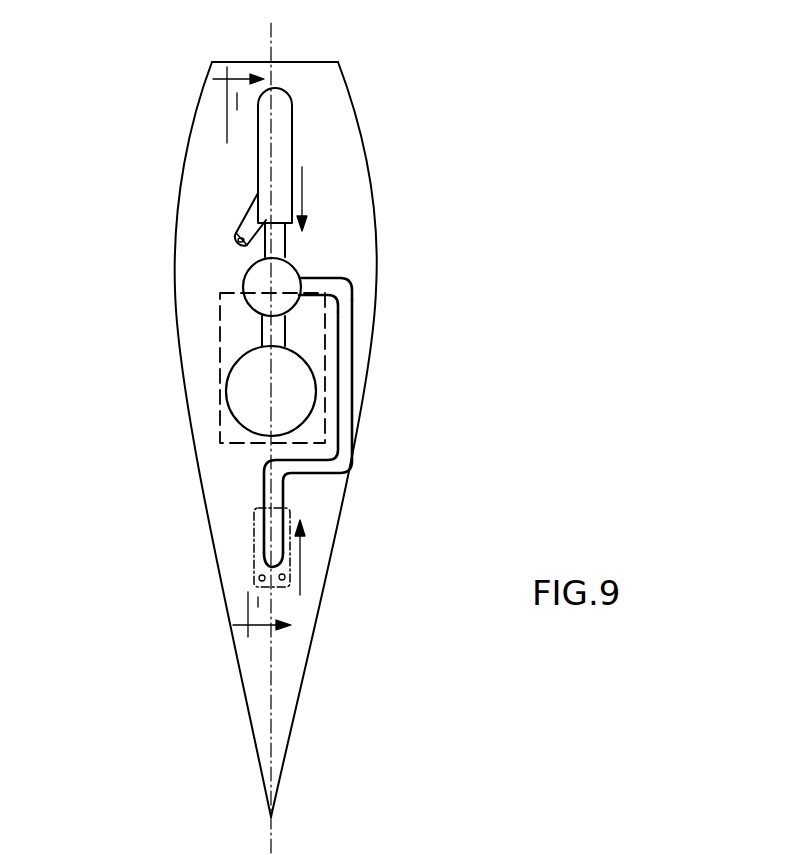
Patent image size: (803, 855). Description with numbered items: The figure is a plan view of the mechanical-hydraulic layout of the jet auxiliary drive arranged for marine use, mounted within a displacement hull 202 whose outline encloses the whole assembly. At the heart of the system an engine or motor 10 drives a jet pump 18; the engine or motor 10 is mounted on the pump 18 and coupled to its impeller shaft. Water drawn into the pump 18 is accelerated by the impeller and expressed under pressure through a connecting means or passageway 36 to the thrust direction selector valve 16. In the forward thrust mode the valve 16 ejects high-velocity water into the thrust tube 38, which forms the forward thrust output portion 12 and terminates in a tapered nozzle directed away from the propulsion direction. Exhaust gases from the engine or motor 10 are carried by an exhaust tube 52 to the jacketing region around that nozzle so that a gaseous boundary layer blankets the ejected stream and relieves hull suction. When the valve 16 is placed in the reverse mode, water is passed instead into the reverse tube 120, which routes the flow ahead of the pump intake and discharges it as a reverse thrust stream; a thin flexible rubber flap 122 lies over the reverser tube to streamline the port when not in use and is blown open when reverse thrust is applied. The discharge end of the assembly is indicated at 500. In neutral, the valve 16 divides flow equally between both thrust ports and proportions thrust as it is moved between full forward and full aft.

The streamlined hull housing 202 is at (336, 60).
The forward thrust output portion 12 is at (292, 143).
The exhaust tube 52 is at (243, 212).
The thrust tube 38 is at (292, 246).
The thrust direction selector valve 16 is at (298, 270).
The connecting passageway 36 is at (283, 338).
The reverse tube 120 is at (347, 362).
The jet pump 18 is at (315, 403).
The engine or motor 10 is at (325, 436).
The flap 122 is at (290, 512).
The discharge outlet 500 is at (290, 578).